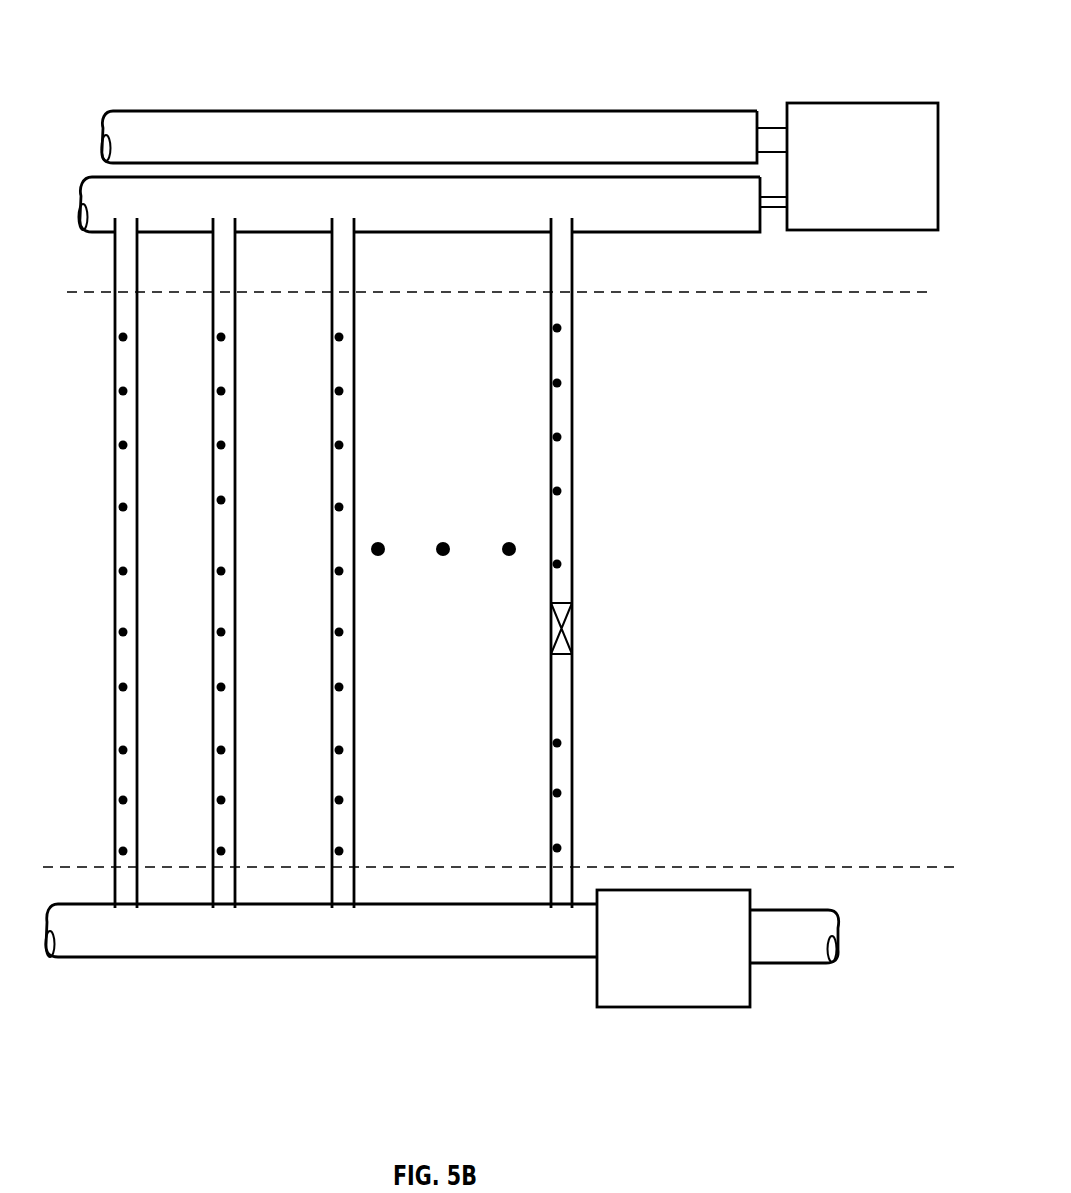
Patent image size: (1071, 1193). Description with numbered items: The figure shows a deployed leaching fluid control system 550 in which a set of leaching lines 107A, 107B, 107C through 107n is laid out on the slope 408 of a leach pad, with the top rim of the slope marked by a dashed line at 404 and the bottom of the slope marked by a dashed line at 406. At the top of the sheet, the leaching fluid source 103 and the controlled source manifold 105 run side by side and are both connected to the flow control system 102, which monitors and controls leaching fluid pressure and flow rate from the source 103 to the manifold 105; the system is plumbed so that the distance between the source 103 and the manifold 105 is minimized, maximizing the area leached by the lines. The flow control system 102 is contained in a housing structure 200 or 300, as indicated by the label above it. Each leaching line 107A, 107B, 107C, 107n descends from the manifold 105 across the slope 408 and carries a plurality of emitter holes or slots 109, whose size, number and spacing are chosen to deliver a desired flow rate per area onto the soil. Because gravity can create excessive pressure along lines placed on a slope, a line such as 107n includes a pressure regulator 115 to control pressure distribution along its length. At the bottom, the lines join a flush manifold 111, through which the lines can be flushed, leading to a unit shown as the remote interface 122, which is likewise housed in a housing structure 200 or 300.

The deployed leaching fluid control system 550 is at (494, 25).
The leaching fluid source 103 is at (430, 137).
The controlled source manifold 105 is at (420, 204).
The flow control system 102 is at (862, 166).
The leaching line 107A is at (139, 313).
The leaching line 107B is at (237, 313).
The leaching line 107C is at (356, 313).
The leaching line 107n is at (574, 324).
The emitter holes/slots 109 is at (551, 496).
The pressure regulator 115 is at (551, 622).
The flush manifold 111 is at (322, 930).
The remote interface 122 is at (718, 948).
The top of the slope 404 is at (858, 292).
The bottom of the slope 406 is at (817, 866).
The slope 408 is at (442, 768).
The housing structure 200 is at (770, 561).
The housing structure 300 is at (692, 1036).